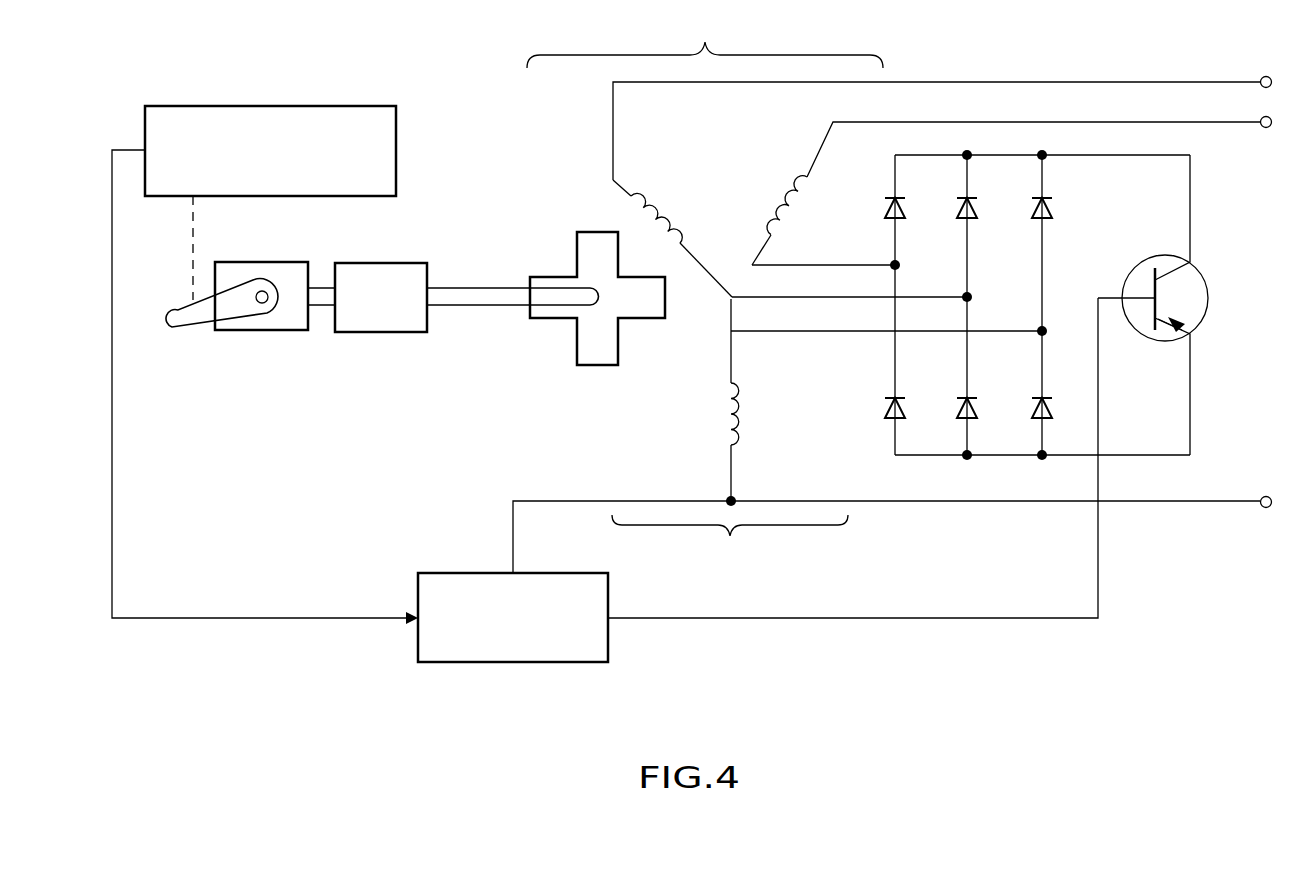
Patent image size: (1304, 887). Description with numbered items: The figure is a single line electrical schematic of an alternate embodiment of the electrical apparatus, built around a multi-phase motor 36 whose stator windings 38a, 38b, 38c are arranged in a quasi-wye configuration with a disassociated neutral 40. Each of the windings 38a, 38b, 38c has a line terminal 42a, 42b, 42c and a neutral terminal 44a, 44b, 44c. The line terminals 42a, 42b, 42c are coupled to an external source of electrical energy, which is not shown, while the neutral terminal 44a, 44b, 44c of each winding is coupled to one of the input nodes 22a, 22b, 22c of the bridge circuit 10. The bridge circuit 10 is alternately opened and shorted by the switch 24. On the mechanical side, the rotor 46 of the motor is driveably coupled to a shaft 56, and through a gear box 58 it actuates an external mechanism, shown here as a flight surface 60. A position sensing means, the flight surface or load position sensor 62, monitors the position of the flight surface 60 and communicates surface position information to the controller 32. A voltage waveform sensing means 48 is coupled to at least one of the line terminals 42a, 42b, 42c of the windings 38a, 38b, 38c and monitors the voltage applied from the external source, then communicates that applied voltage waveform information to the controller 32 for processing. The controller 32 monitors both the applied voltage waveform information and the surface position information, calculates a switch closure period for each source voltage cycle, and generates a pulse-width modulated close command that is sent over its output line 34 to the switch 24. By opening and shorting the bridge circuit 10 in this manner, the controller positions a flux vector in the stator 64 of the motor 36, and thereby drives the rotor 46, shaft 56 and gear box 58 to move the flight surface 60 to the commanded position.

The bridge circuit 10 is at (958, 328).
The input node 22a is at (928, 258).
The input node 22b is at (972, 299).
The input node 22c is at (1067, 308).
The switch 24 is at (1215, 277).
The controller 32 is at (440, 663).
The control line 34 is at (650, 620).
The multi-phase motor 36 is at (705, 41).
The stator winding 38a is at (790, 205).
The stator winding 38b is at (658, 210).
The stator winding 38c is at (720, 398).
The disassociated neutral 40 is at (733, 272).
The line terminal 42a is at (1005, 122).
The line terminal 42b is at (985, 82).
The line terminal 42c is at (1028, 505).
The neutral terminal 44a is at (792, 265).
The neutral terminal 44b is at (745, 300).
The neutral terminal 44c is at (750, 337).
The rotor 46 is at (597, 232).
The voltage waveform sensing means 48 is at (578, 500).
The shaft 56 is at (450, 288).
The gear box 58 is at (392, 262).
The flight surface 60 is at (178, 332).
The flight surface or load position sensor 62 is at (312, 106).
The stator 64 is at (730, 543).